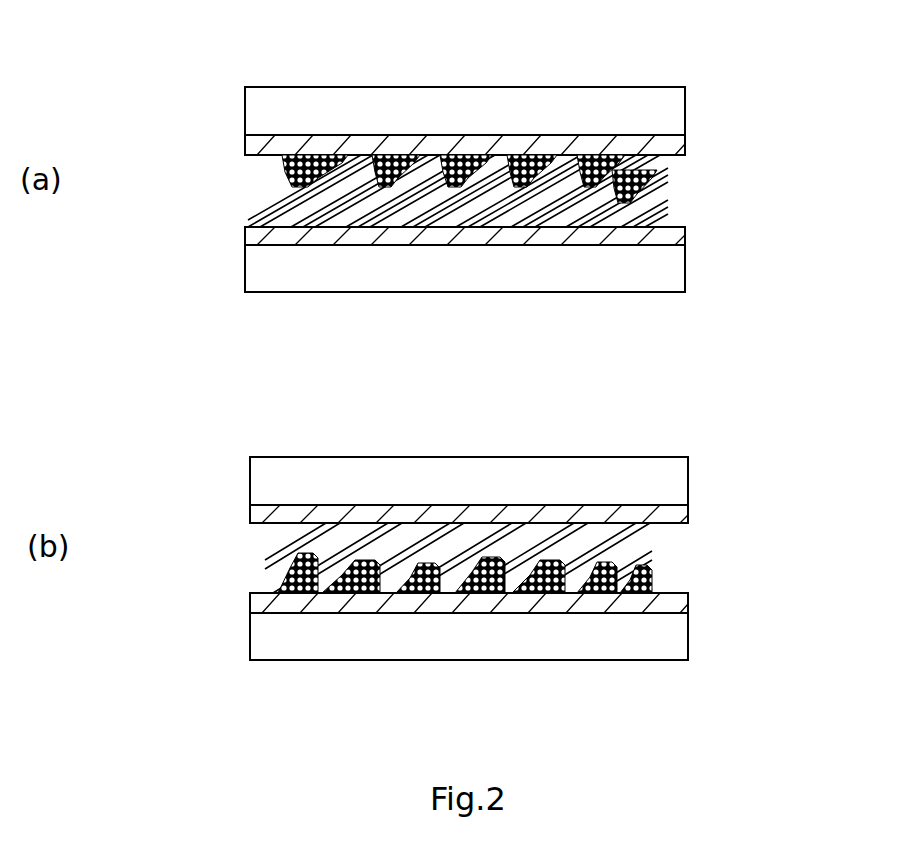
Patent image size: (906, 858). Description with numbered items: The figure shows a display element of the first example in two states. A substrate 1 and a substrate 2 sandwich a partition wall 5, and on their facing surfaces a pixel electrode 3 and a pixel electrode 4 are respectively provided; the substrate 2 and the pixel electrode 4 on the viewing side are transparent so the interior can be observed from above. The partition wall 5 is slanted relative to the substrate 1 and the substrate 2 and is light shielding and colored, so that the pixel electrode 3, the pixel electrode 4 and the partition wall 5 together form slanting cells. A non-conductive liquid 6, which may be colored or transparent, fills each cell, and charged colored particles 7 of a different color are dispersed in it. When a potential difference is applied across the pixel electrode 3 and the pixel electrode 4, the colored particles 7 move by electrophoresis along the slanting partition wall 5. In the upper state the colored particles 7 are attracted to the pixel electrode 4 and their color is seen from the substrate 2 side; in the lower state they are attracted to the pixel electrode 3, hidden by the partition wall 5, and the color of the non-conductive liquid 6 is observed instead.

The substrate 1 is at (672, 283).
The substrate 2 is at (670, 101).
The pixel electrode 3 is at (672, 237).
The pixel electrode 4 is at (672, 142).
The partition wall 5 is at (262, 214).
The non-conductive liquid 6 is at (252, 192).
The colored particles 7 is at (304, 156).